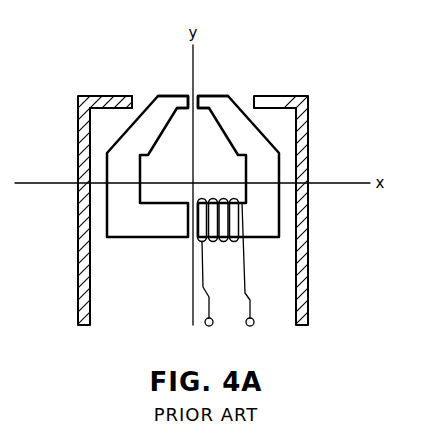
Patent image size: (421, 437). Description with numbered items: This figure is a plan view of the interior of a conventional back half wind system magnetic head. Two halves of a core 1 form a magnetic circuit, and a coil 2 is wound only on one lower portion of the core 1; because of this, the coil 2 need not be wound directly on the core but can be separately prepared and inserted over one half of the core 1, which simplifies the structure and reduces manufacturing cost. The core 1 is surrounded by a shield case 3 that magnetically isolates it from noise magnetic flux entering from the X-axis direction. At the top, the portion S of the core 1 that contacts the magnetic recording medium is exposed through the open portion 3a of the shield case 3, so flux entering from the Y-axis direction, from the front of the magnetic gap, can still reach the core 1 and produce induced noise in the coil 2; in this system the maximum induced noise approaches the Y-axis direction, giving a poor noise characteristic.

The core 1 is at (150, 239).
The coil 2 is at (242, 218).
The shield case 3 is at (78, 139).
The open portion of the shield case 3a is at (135, 100).
The portion of the core contacted by the magnetic recording medium S is at (176, 95).